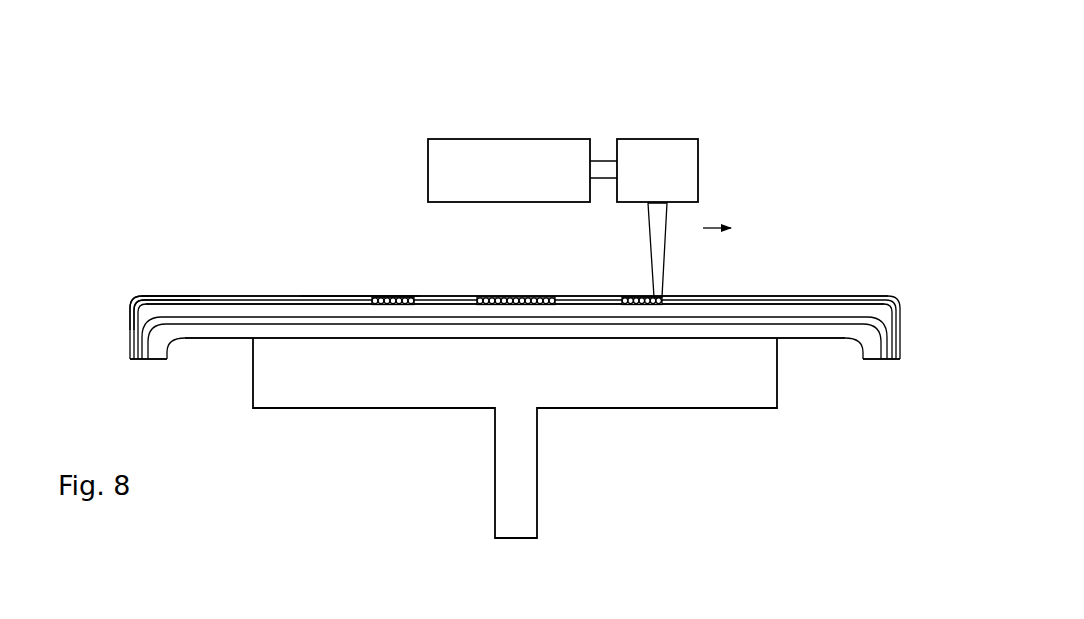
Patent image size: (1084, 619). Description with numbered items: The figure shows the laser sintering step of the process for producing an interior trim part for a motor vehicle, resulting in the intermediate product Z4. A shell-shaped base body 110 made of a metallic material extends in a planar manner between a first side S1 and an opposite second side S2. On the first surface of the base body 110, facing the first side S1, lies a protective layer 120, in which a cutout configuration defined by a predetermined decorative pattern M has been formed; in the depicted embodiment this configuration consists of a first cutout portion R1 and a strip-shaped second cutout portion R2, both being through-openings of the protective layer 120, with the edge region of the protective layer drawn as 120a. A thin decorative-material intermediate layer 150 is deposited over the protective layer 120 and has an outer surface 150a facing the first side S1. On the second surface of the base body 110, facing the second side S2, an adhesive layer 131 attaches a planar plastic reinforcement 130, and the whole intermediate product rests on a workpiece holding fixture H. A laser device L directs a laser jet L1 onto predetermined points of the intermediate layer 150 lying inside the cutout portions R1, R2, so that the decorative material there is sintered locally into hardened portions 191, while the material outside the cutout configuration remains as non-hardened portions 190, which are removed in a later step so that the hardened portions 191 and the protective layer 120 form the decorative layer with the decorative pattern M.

The shell-shaped base body 110 is at (813, 312).
The protective layer 120 is at (224, 298).
The first layer edge portion 120a is at (248, 296).
The plastic reinforcement 130 is at (868, 342).
The adhesive layer 131 is at (843, 320).
The decorative-material intermediate layer 150 is at (458, 297).
The outer surface 150a is at (169, 293).
The non-hardened portions 190 is at (690, 285).
The hardened portions 191 is at (382, 276).
The laser device L is at (655, 110).
The laser jet L1 is at (651, 251).
The workpiece holding fixture H is at (622, 403).
The first side S1 is at (238, 188).
The second side S2 is at (233, 392).
The decorative pattern M is at (360, 278).
The intermediate product Z4 is at (181, 264).
The first cutout portion R1 is at (413, 297).
The second cutout portion R2 is at (622, 297).